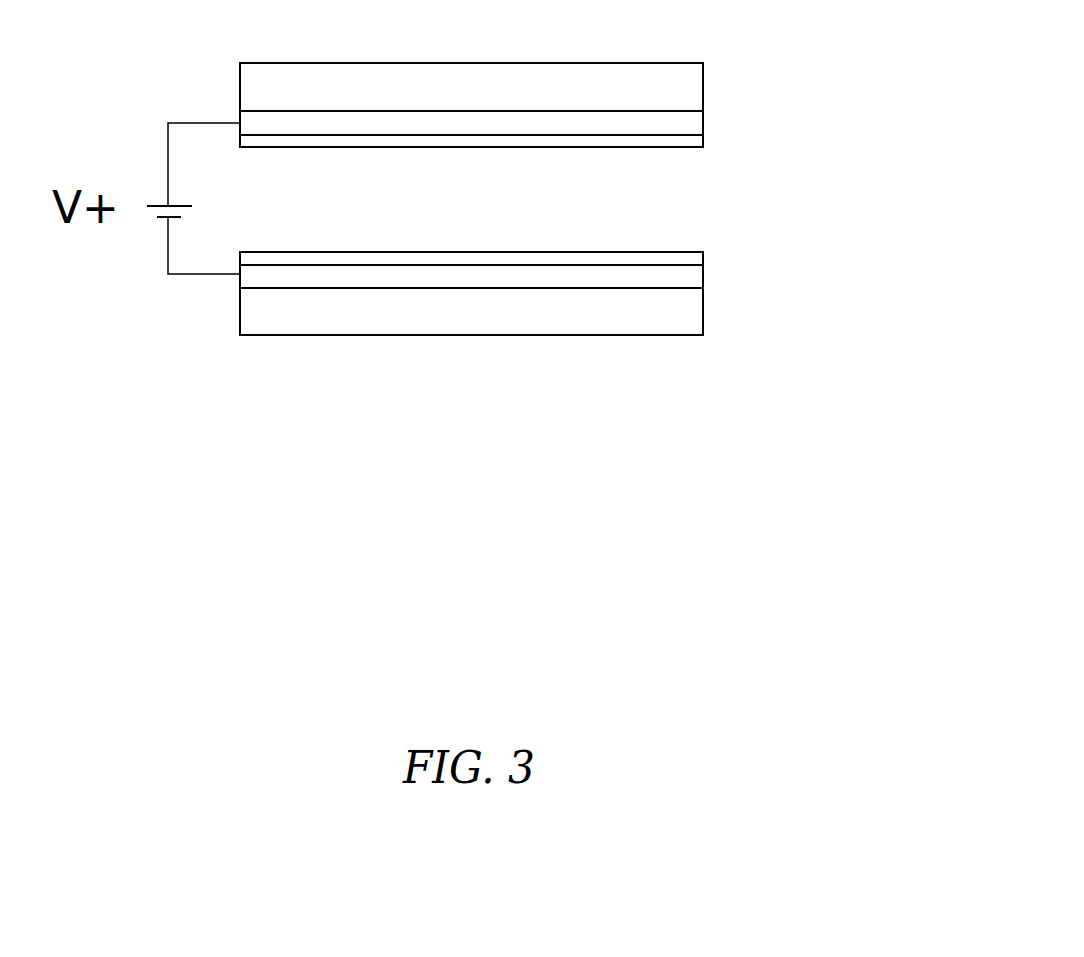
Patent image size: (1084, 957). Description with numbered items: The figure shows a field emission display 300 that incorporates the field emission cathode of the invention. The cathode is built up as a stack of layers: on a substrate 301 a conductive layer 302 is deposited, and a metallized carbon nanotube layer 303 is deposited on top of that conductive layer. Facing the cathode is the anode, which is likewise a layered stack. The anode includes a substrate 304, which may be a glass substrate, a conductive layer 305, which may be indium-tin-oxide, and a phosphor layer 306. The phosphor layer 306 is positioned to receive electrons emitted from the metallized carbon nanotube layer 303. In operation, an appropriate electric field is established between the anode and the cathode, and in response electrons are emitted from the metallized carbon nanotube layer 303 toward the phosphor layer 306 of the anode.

The field emission display 300 is at (582, 394).
The substrate 301 is at (715, 322).
The conductive layer 302 is at (716, 282).
The metallized carbon nanotube layer 303 is at (716, 252).
The substrate 304 is at (715, 80).
The conductive layer 305 is at (716, 122).
The phosphor layer 306 is at (716, 152).